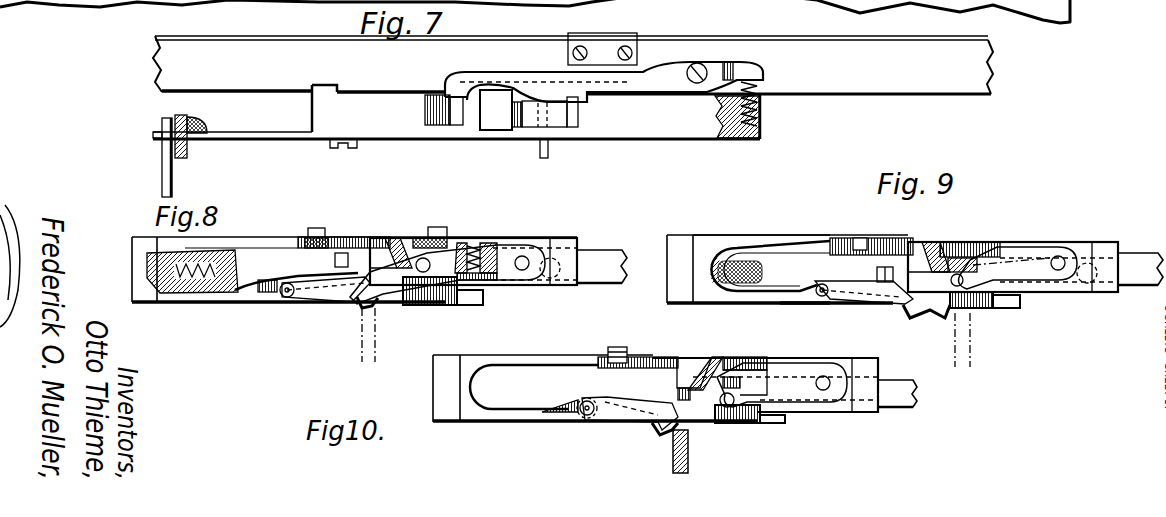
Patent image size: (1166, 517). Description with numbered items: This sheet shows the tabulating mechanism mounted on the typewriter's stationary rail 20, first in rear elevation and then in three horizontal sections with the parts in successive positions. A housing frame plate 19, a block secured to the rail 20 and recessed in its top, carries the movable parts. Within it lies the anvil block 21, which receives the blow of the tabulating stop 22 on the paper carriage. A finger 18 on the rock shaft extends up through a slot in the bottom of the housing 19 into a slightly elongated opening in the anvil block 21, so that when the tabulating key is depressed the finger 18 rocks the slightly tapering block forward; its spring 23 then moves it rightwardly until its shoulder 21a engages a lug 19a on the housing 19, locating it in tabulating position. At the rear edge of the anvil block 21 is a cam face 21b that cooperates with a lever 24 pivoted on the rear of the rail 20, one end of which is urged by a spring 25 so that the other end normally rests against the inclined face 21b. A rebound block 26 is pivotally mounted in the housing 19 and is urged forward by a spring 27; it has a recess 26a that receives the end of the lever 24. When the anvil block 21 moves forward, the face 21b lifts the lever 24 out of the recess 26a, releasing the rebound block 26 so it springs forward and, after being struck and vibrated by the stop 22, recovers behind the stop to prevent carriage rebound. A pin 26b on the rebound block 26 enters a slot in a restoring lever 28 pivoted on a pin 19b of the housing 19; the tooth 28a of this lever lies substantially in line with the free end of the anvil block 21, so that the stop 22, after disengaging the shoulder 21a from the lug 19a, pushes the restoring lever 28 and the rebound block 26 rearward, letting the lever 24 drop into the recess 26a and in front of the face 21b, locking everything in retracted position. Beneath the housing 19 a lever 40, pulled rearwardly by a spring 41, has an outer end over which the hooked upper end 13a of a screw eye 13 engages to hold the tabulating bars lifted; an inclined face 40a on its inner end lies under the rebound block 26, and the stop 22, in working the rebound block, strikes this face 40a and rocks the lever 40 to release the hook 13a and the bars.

In FIG. 7, the screw eye 13 is at (162, 170).
In FIG. 7, the hooked upper end of screw eye 13a is at (160, 131).
In FIG. 7, the finger 18 is at (540, 153).
In FIG. 8, the finger 18 is at (343, 253).
In FIG. 9, the finger 18 is at (882, 282).
In FIG. 7, the housing frame plate 19 is at (638, 127).
In FIG. 8, the housing frame plate 19 is at (360, 237).
In FIG. 9, the housing frame plate 19 is at (788, 242).
In FIG. 7, the lug 19a is at (501, 110).
In FIG. 8, the lug 19a is at (391, 253).
In FIG. 9, the lug 19a is at (928, 242).
In FIG. 10, the lug 19a is at (700, 365).
In FIG. 9, the pin 19b is at (803, 302).
In FIG. 7, the stationary rail 20 is at (898, 90).
In FIG. 7, the anvil block 21 is at (557, 118).
In FIG. 8, the anvil block 21 is at (288, 269).
In FIG. 9, the anvil block 21 is at (787, 269).
In FIG. 10, the anvil block 21 is at (595, 388).
In FIG. 8, the shoulder 21a is at (372, 247).
In FIG. 9, the shoulder 21a is at (900, 232).
In FIG. 10, the shoulder 21a is at (665, 348).
In FIG. 7, the cam face 21b is at (573, 120).
In FIG. 8, the cam face 21b is at (310, 229).
In FIG. 9, the cam face 21b is at (860, 238).
In FIG. 10, the cam face 21b is at (617, 347).
In FIG. 10, the tabulating stop 22 is at (693, 460).
In FIG. 8, the spring 23 is at (193, 294).
In FIG. 9, the spring 23 is at (737, 263).
In FIG. 7, the lever 24 is at (660, 72).
In FIG. 8, the lever 24 is at (325, 236).
In FIG. 7, the spring 25 is at (760, 89).
In FIG. 7, the rebound block 26 is at (433, 118).
In FIG. 8, the rebound block 26 is at (518, 253).
In FIG. 9, the rebound block 26 is at (1037, 278).
In FIG. 10, the rebound block 26 is at (765, 385).
In FIG. 8, the recess 26a is at (452, 242).
In FIG. 9, the recess 26a is at (978, 255).
In FIG. 8, the pin 26b is at (448, 306).
In FIG. 9, the pin 26b is at (985, 300).
In FIG. 10, the pin 26b is at (733, 416).
In FIG. 8, the spring 27 is at (478, 250).
In FIG. 8, the restoring lever 28 is at (332, 303).
In FIG. 9, the restoring lever 28 is at (857, 287).
In FIG. 10, the restoring lever 28 is at (625, 415).
In FIG. 8, the tooth 28a is at (360, 308).
In FIG. 9, the tooth 28a is at (907, 315).
In FIG. 10, the tooth 28a is at (663, 433).
In FIG. 7, the lever 40 is at (296, 141).
In FIG. 8, the lever 40 is at (598, 258).
In FIG. 9, the lever 40 is at (1133, 262).
In FIG. 10, the lever 40 is at (902, 402).
In FIG. 8, the inclined face 40a is at (383, 305).
In FIG. 9, the inclined face 40a is at (923, 318).
In FIG. 7, the spring 41 is at (207, 126).